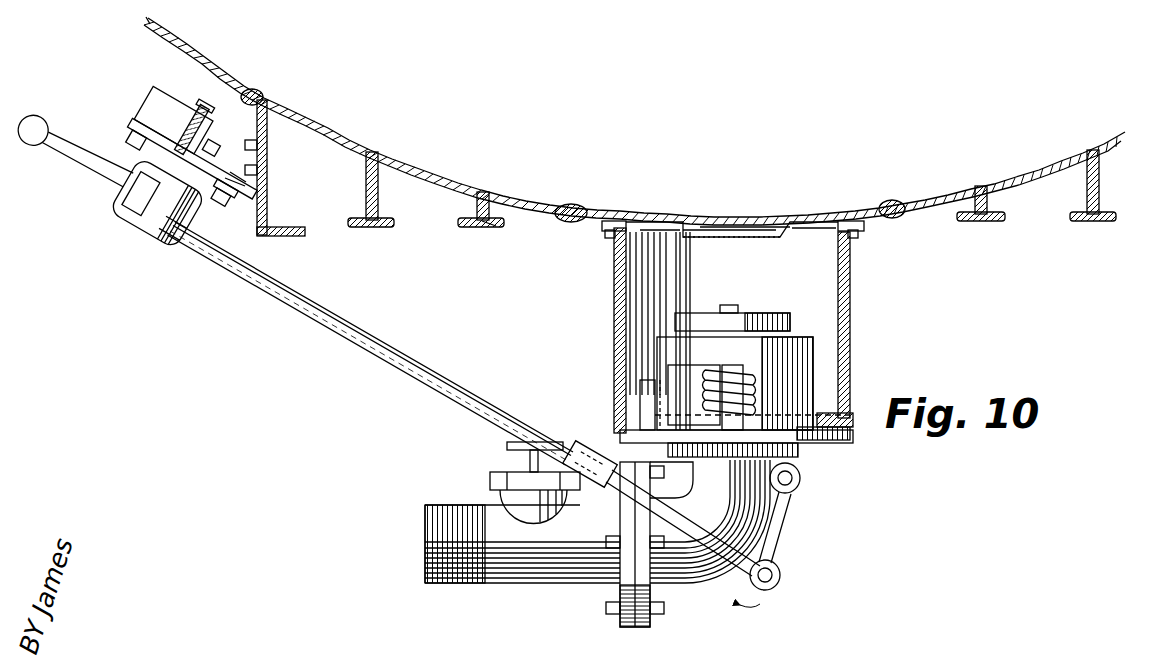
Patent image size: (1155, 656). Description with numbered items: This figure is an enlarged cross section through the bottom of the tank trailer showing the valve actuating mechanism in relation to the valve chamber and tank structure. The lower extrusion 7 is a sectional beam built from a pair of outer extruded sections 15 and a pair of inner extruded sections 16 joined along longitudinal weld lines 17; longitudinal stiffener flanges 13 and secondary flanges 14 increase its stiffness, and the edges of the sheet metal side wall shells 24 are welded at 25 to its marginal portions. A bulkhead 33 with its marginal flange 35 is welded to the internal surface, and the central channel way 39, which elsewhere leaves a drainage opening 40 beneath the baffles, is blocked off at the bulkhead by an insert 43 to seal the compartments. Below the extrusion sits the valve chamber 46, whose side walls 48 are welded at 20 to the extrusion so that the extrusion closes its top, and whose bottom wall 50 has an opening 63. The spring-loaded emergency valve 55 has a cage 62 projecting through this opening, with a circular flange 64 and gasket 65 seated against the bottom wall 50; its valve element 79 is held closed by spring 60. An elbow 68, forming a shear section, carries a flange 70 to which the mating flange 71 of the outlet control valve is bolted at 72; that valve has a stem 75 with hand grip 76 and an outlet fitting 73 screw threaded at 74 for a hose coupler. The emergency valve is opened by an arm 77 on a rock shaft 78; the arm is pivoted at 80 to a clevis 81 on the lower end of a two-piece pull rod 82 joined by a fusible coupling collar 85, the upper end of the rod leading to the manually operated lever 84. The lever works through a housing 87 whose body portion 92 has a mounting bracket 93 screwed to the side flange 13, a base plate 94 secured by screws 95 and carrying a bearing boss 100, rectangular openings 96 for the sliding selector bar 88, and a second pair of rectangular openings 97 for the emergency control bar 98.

The lower extrusion 7 is at (483, 226).
The flange 13 is at (268, 208).
The secondary flange 14 is at (378, 198).
The outer extruded section 15 is at (392, 158).
The inner extruded section 16 is at (622, 221).
The longitudinal weld line 17 is at (566, 205).
The weld 20 is at (608, 238).
The side wall shell 24 is at (148, 21).
The weld 25 is at (262, 96).
The bulkhead 33 is at (684, 228).
The marginal flange 35 is at (824, 230).
The central channel way 39 is at (715, 233).
The opening 40 is at (738, 230).
The insert 43 is at (760, 235).
The valve chamber 46 is at (612, 318).
The side wall 48 is at (614, 368).
The bottom wall 50 is at (850, 440).
The emergency valve 55 is at (775, 312).
The spring 60 is at (748, 398).
The cage 62 is at (810, 340).
The opening 63 is at (835, 418).
The circular flange 64 is at (800, 455).
The gasket 65 is at (620, 432).
The elbow 68 is at (695, 485).
The flange 70 is at (665, 605).
The mating flange 71 is at (620, 594).
The bolt 72 is at (622, 618).
The outlet fitting 73 is at (512, 565).
The screw thread 74 is at (440, 584).
The stem 75 is at (530, 461).
The hand grip 76 is at (512, 444).
The arm 77 is at (780, 548).
The rock shaft 78 is at (790, 482).
The valve element 79 is at (795, 430).
The pivotal connection 80 is at (772, 586).
The clevis 81 is at (738, 577).
The pull rod 82 is at (370, 332).
The lever 84 is at (72, 152).
The fusible coupling collar 85 is at (583, 480).
The housing 87 is at (146, 106).
The selector bar 88 is at (204, 104).
The body portion 92 is at (177, 103).
The mounting bracket 93 is at (258, 148).
The base plate 94 is at (131, 193).
The screw 95 is at (130, 140).
The rectangular opening 96 is at (210, 128).
The rectangular opening 97 is at (258, 176).
The emergency control bar 98 is at (221, 198).
The bearing boss 100 is at (166, 236).